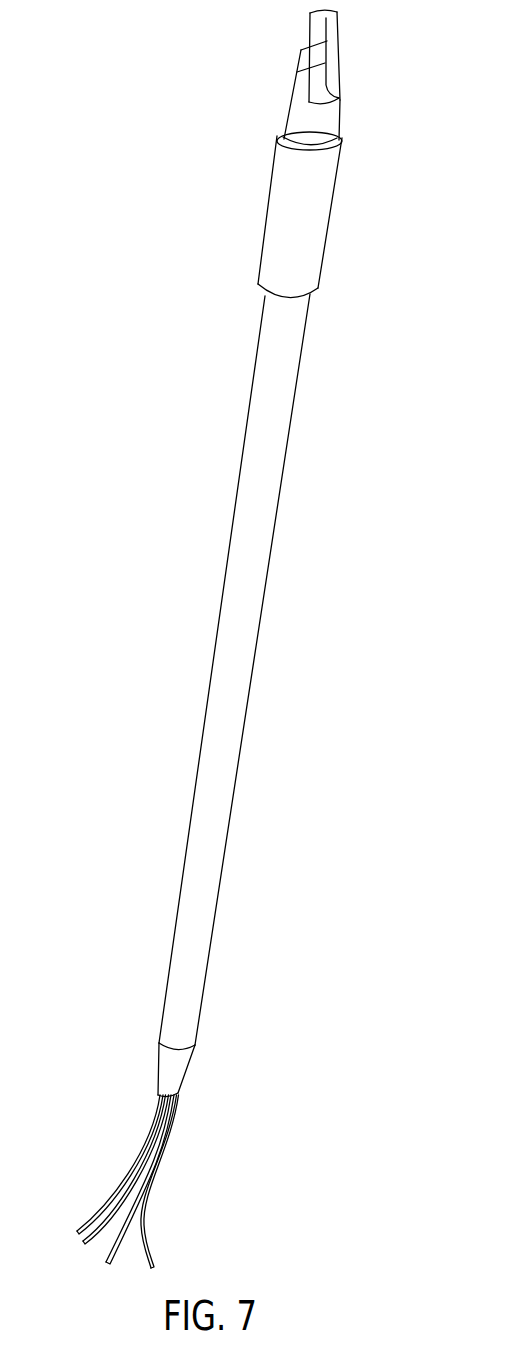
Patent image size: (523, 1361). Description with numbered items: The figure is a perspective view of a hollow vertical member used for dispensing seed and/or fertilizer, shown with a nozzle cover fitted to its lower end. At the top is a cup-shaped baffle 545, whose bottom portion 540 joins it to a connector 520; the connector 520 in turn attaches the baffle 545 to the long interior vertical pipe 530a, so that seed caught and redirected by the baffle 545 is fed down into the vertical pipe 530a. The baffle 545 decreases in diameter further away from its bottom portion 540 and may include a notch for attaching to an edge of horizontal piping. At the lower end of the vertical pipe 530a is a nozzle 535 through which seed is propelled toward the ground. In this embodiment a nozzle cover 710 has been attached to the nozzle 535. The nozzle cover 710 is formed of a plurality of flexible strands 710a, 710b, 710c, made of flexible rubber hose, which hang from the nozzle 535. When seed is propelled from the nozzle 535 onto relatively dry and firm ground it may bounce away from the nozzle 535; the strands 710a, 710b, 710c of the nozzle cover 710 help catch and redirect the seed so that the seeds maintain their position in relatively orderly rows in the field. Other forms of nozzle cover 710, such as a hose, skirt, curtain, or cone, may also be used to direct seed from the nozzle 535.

The baffle 545 is at (318, 15).
The bottom portion of baffle 540 is at (342, 118).
The connector 520 is at (330, 230).
The interior vertical pipe 530a is at (272, 548).
The nozzle 535 is at (180, 1082).
The nozzle cover 710 is at (131, 1200).
The flexible strand 710a is at (150, 1248).
The flexible strand 710b is at (83, 1223).
The flexible strand 710c is at (107, 1263).